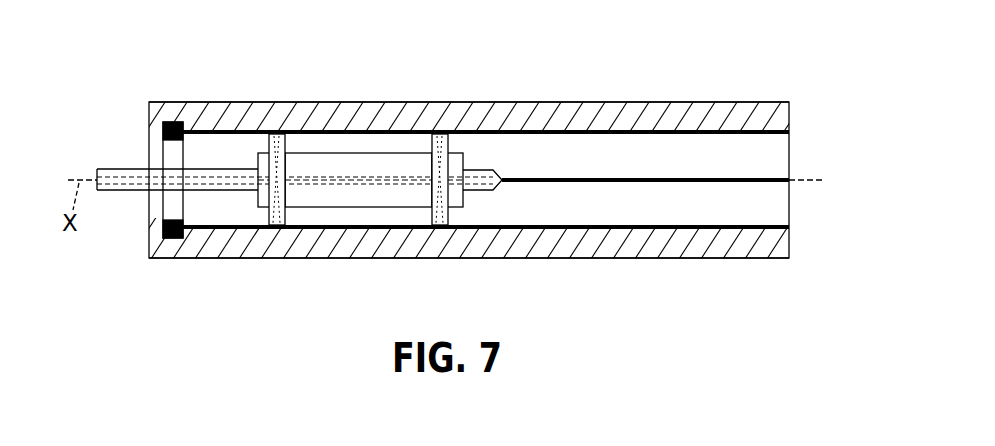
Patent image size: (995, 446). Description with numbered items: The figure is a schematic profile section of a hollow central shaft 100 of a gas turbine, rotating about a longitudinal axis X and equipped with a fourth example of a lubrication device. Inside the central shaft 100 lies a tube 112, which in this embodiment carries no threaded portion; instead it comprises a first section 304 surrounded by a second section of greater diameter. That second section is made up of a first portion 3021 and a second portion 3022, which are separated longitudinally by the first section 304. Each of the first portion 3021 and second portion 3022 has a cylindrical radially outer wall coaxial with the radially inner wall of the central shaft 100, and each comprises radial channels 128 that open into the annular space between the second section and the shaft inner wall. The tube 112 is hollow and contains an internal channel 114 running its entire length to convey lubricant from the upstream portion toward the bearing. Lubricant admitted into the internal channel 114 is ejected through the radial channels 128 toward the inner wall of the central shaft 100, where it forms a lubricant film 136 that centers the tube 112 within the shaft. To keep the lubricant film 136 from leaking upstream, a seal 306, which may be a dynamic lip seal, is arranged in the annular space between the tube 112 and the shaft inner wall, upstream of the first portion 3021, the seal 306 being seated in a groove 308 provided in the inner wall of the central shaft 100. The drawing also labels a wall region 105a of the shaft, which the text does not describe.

The central shaft 100 is at (213, 108).
The upper housing wall 105a is at (708, 102).
The lubricant film 136 is at (693, 238).
The groove 308 is at (161, 123).
The seal 306 is at (163, 241).
The tube 112 is at (172, 188).
The internal channel 114 is at (365, 175).
The first section 304 is at (358, 210).
The first portion 3021 is at (262, 214).
The second portion 3022 is at (428, 214).
The radial channels 128 is at (276, 142).